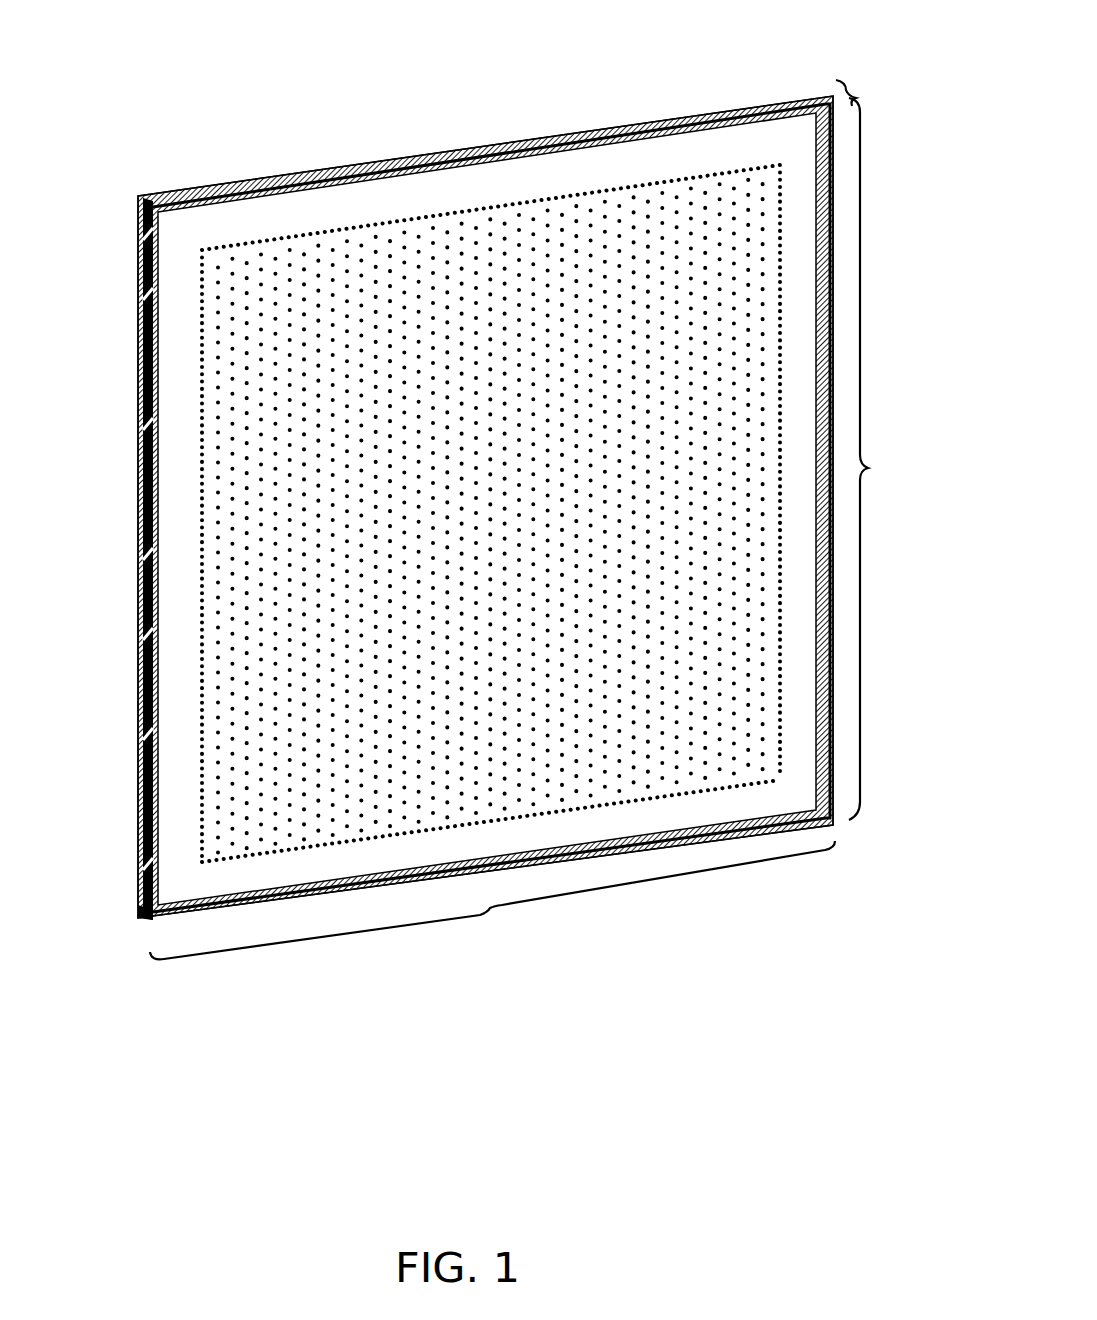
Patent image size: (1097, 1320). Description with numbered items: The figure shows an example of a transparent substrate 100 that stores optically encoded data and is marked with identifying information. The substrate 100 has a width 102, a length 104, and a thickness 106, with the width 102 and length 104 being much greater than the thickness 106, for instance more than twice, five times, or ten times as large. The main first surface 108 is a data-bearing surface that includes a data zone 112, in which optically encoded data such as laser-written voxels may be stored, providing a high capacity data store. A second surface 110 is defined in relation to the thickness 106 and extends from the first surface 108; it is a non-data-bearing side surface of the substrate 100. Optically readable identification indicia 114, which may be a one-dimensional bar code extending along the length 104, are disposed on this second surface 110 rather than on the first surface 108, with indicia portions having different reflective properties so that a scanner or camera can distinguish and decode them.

The transparent substrate 100 is at (624, 1028).
The width 102 is at (490, 912).
The length 104 is at (868, 468).
The thickness 106 is at (852, 83).
The first surface 108 is at (536, 174).
The second surface 110 is at (146, 919).
The data zone 112 is at (437, 398).
The optically readable identification indicia 114 is at (118, 590).